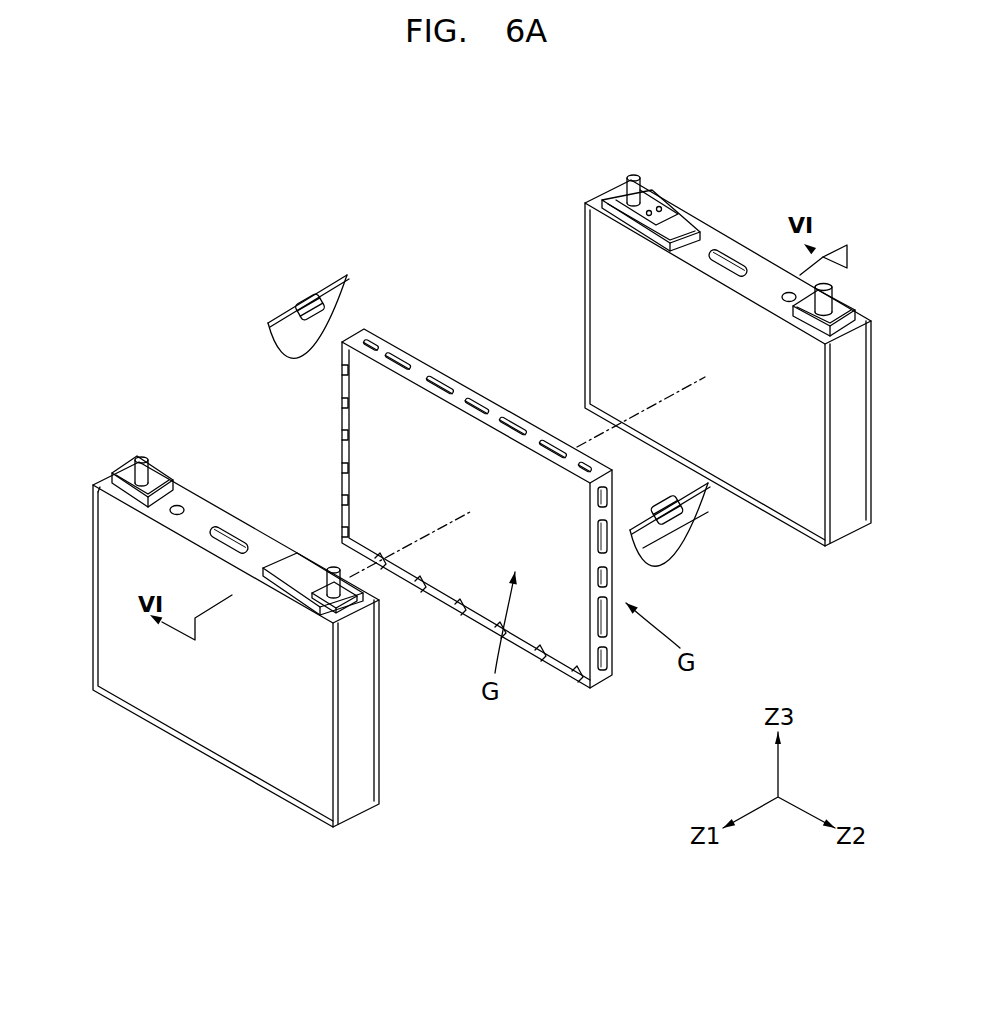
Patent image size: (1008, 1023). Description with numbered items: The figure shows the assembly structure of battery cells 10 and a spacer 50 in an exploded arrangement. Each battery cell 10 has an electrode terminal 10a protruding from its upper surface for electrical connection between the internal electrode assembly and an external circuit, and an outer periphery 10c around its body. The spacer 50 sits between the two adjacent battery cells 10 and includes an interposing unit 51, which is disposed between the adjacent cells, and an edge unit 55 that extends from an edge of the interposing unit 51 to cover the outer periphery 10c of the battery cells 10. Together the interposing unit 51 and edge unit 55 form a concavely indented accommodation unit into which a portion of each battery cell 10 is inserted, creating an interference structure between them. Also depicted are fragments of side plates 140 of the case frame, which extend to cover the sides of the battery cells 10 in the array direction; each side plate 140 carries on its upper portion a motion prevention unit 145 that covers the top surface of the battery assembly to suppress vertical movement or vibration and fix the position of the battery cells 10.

The battery cell 10 is at (98, 463).
The electrode terminal 10a is at (143, 457).
The outer periphery 10c is at (205, 497).
The spacer 50 is at (446, 474).
The interposing unit 51 is at (373, 452).
The edge unit 55 is at (468, 387).
The side plate 140 is at (278, 317).
The motion prevention unit 145 is at (317, 302).